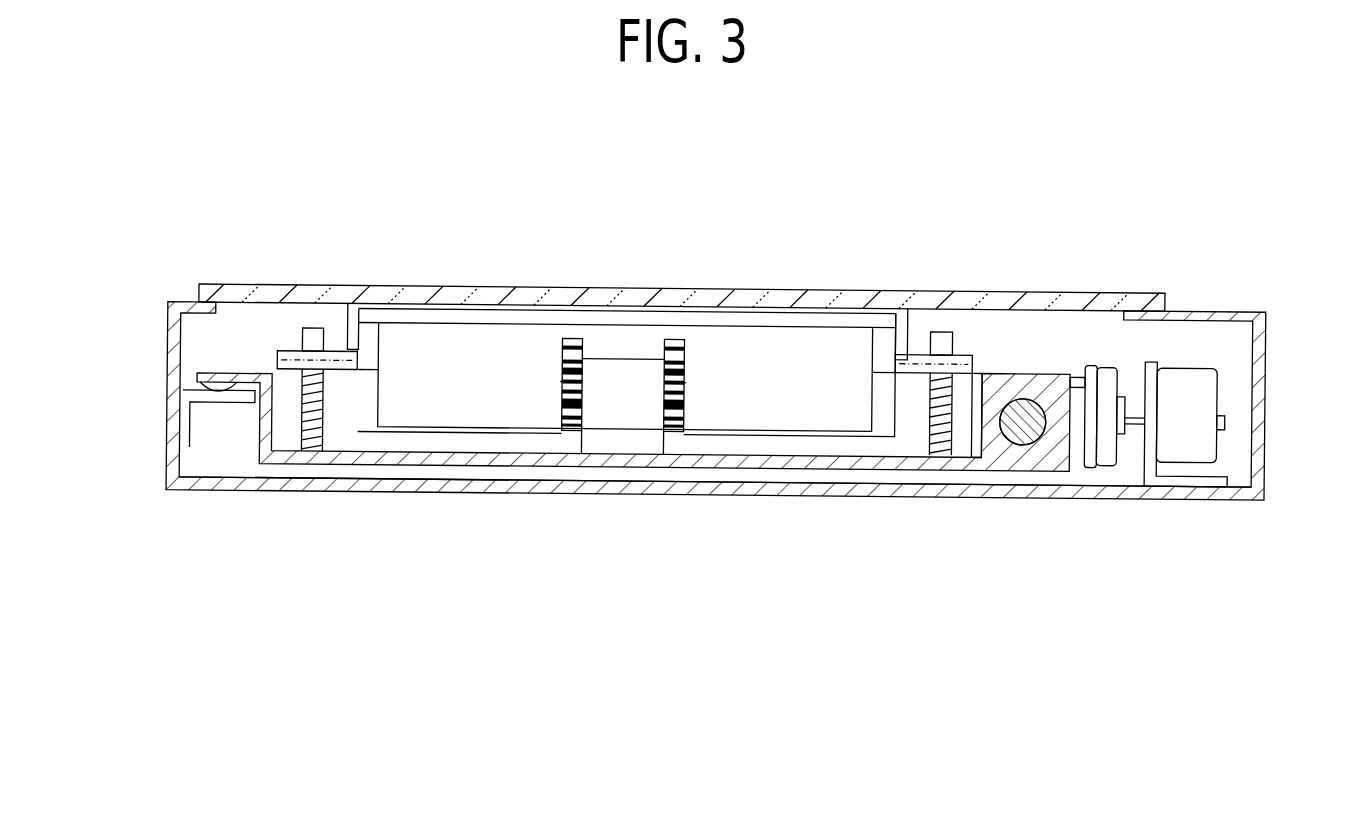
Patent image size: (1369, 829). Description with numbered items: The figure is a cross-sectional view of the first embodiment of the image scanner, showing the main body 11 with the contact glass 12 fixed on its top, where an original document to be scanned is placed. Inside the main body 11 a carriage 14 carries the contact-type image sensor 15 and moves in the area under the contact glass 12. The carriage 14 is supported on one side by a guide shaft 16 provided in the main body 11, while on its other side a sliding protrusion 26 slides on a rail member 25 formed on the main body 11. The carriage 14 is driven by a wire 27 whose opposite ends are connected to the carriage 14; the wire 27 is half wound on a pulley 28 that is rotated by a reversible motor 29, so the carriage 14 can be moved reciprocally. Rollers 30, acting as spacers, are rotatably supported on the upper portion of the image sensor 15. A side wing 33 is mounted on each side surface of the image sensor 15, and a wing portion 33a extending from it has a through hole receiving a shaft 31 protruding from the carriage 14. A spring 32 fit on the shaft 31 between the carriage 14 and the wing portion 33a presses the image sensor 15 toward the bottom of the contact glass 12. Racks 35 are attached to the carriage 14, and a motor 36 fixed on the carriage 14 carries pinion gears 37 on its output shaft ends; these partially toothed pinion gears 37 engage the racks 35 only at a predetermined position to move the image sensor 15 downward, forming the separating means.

The main body 11 is at (1268, 362).
The contact glass 12 is at (722, 290).
The carriage 14 is at (432, 470).
The contact-type image sensor 15 is at (785, 418).
The guide shaft 16 is at (1025, 443).
The rail member 25 is at (183, 413).
The sliding protrusion 26 is at (205, 372).
The wire 27 is at (1105, 465).
The pulley 28 is at (1095, 357).
The reversible motor 29 is at (1205, 438).
The rollers 30 is at (348, 296).
The shaft 31 is at (313, 333).
The spring 32 is at (340, 413).
The side wing 33 is at (362, 428).
The wing portion 33a is at (285, 352).
The racks 35 is at (575, 337).
The motor 36 is at (622, 420).
The pinion gears 37 is at (560, 378).